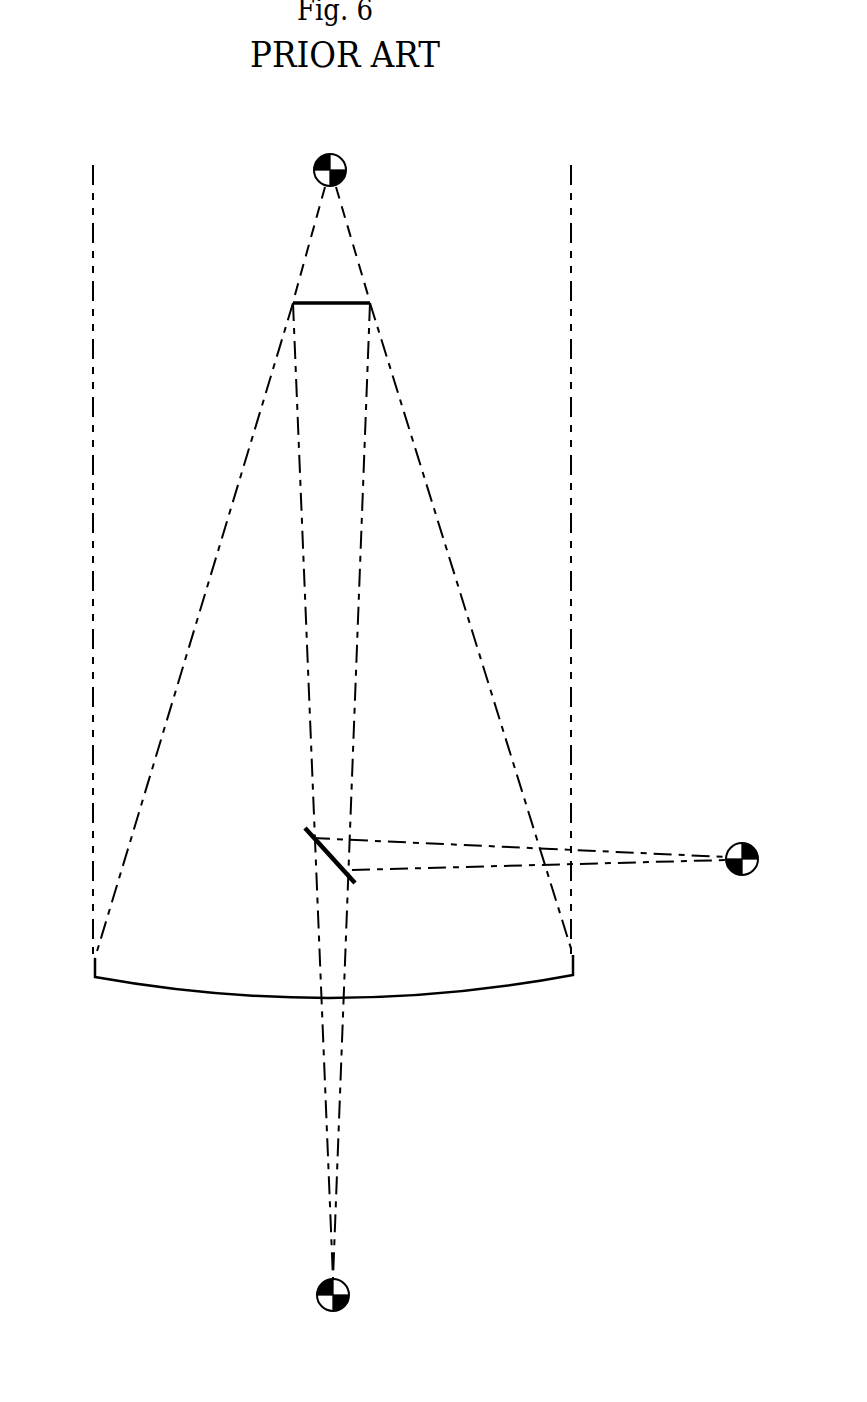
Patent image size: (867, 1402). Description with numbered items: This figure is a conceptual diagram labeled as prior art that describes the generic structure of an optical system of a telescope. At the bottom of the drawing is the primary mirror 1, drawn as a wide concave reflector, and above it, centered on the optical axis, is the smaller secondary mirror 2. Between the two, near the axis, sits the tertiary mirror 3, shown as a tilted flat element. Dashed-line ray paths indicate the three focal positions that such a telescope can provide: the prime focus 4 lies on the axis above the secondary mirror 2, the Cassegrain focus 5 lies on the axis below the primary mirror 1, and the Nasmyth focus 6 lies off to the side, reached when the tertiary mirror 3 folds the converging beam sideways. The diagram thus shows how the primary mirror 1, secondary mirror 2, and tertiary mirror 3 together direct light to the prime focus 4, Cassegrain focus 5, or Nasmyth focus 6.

The primary mirror 1 is at (437, 994).
The secondary mirror 2 is at (350, 300).
The tertiary mirror 3 is at (318, 833).
The prime focus 4 is at (348, 172).
The Cassegrain focus 5 is at (350, 1290).
The Nasmyth focus 6 is at (742, 842).